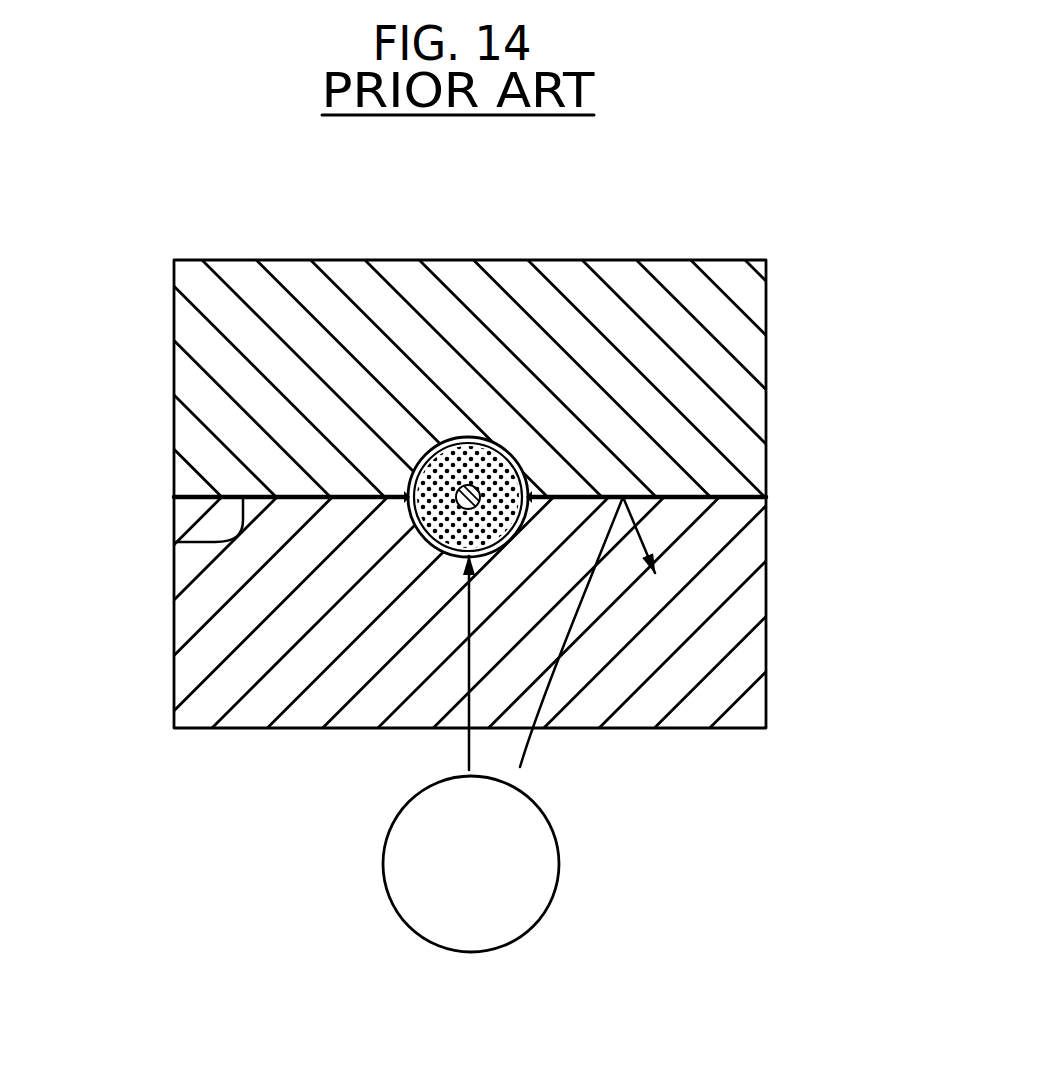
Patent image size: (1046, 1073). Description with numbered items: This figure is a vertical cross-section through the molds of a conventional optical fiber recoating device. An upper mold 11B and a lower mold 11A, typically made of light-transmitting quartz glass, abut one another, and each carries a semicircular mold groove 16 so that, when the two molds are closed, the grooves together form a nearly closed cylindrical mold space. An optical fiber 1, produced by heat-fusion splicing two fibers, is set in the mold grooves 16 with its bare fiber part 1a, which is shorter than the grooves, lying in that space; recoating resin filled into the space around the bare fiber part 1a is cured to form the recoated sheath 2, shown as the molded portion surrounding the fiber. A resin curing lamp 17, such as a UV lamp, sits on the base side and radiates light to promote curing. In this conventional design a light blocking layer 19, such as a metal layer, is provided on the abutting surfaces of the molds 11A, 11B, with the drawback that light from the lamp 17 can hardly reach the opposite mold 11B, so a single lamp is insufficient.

The optical fiber 1 is at (405, 520).
The bare fiber part 1a is at (470, 485).
The recoated sheath 2 is at (515, 460).
The lower mold 11A is at (174, 637).
The upper mold 11B is at (174, 383).
The mold groove 16 is at (433, 445).
The resin curing lamp 17 is at (383, 865).
The light blocking layer 19 is at (176, 542).